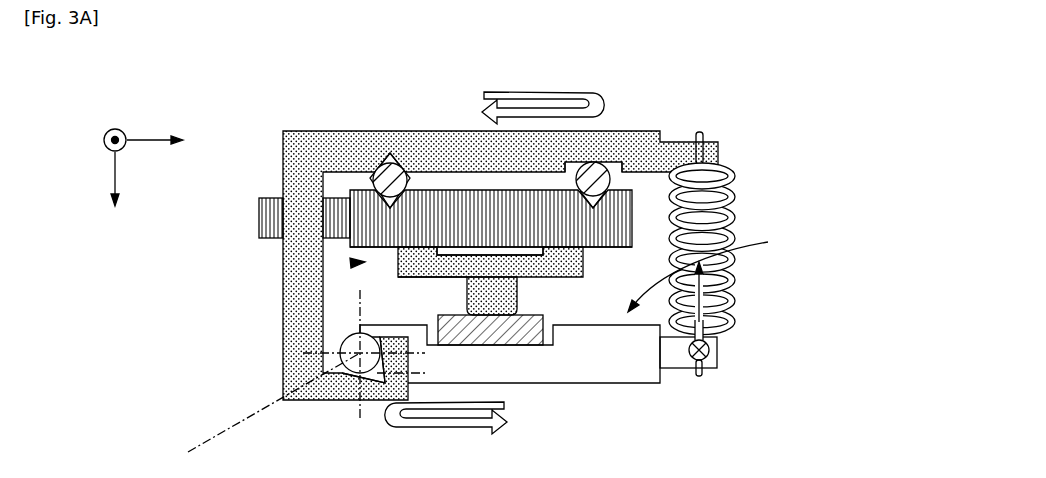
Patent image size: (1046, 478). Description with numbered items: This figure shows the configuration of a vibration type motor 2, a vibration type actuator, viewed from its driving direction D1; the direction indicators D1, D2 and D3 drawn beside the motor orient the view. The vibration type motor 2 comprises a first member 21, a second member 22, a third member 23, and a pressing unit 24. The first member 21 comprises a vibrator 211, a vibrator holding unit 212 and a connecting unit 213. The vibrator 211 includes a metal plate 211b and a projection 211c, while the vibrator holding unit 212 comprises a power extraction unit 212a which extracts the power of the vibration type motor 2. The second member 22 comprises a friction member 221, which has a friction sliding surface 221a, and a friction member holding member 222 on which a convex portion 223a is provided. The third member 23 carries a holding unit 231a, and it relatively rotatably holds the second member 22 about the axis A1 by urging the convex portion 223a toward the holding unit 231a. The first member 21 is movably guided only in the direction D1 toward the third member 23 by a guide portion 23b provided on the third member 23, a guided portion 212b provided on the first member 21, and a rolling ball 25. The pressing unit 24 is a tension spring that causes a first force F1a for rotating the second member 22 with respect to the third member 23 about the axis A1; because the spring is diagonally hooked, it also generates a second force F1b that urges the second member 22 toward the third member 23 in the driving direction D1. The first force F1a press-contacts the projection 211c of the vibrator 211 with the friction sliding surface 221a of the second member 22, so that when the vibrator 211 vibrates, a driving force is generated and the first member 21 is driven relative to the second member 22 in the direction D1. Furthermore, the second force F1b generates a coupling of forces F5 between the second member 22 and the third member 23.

The vibration type motor 2 is at (815, 99).
The first member 21 is at (352, 264).
The vibrator 211 is at (398, 275).
The metal plate 211b is at (380, 280).
The projection 211c is at (517, 295).
The vibrator holding unit 212 is at (357, 190).
The power extraction unit 212a is at (262, 228).
The guided portion 212b is at (418, 248).
The connecting unit 213 is at (513, 253).
The second member 22 is at (715, 270).
The friction member 221 is at (540, 344).
The friction sliding surface 221a is at (462, 345).
The friction member holding member 222 is at (652, 372).
The convex portion 223a is at (350, 368).
The third member 23 is at (288, 155).
The guide portion 23b is at (580, 163).
The holding unit 231a is at (362, 393).
The pressing unit 24 is at (733, 214).
The rolling ball 25 is at (378, 160).
The axis A1 is at (286, 379).
The first force F1a is at (715, 302).
The second force F1b is at (715, 350).
The coupling of forces F5 is at (495, 249).
The driving direction D1 is at (107, 127).
The second direction D2 is at (96, 179).
The third direction D3 is at (155, 126).